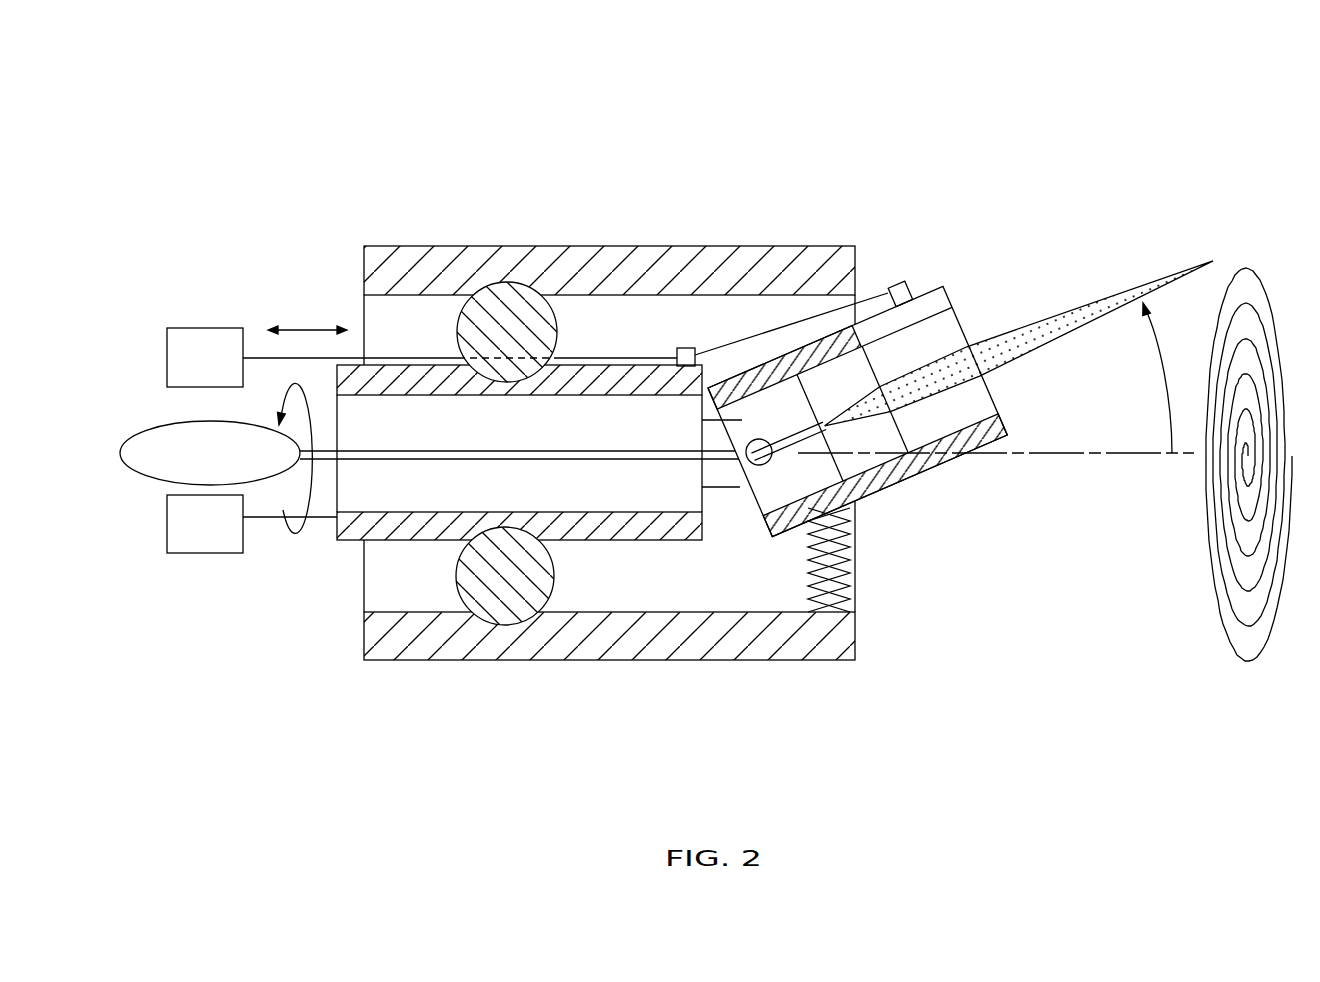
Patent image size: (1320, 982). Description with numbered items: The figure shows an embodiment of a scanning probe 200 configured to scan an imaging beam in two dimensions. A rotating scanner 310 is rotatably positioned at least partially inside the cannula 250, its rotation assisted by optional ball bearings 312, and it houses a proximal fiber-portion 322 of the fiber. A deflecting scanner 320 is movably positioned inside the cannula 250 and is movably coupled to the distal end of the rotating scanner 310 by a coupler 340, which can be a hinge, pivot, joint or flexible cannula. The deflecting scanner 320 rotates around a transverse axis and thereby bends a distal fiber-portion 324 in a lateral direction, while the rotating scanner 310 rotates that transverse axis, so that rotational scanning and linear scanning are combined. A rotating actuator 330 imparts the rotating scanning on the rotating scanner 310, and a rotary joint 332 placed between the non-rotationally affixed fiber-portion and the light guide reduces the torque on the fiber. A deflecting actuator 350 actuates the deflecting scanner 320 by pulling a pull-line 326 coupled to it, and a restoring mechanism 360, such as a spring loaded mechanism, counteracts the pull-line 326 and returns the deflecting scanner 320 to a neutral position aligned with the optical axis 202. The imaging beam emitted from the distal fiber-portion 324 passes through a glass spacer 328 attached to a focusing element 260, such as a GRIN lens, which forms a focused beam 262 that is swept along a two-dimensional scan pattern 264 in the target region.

The scanning probe 200 is at (486, 144).
The optical axis 202 is at (1062, 455).
The cannula 250 is at (815, 662).
The focusing element 260 is at (943, 337).
The focused beam 262 is at (1008, 348).
The 2D pattern 264 is at (1217, 614).
The rotating scanner 310 is at (640, 540).
The ball bearings 312 is at (487, 535).
The deflecting scanner 320 is at (933, 303).
The proximal fiber-portion 322 is at (593, 458).
The distal fiber-portion 324 is at (793, 433).
The pull-line 326 is at (748, 337).
The glass spacer 328 is at (867, 437).
The rotating actuator 330 is at (228, 533).
The rotary joint 332 is at (275, 471).
The coupler 340 is at (765, 465).
The deflecting actuator 350 is at (228, 367).
The restoring mechanism 360 is at (850, 557).